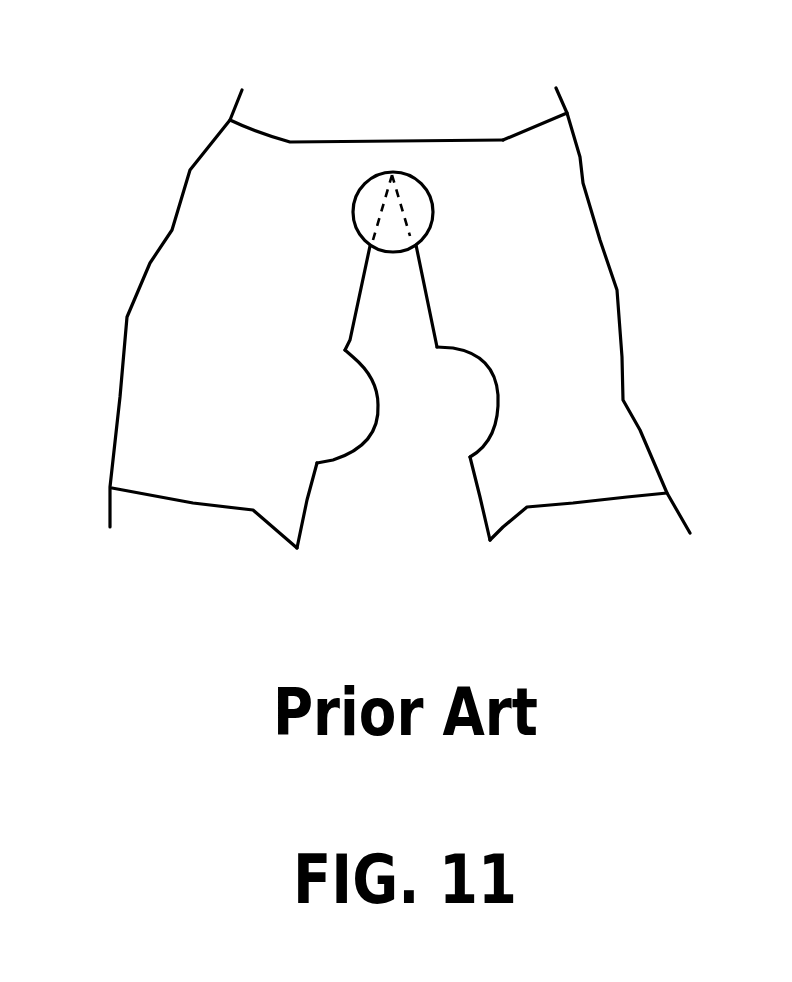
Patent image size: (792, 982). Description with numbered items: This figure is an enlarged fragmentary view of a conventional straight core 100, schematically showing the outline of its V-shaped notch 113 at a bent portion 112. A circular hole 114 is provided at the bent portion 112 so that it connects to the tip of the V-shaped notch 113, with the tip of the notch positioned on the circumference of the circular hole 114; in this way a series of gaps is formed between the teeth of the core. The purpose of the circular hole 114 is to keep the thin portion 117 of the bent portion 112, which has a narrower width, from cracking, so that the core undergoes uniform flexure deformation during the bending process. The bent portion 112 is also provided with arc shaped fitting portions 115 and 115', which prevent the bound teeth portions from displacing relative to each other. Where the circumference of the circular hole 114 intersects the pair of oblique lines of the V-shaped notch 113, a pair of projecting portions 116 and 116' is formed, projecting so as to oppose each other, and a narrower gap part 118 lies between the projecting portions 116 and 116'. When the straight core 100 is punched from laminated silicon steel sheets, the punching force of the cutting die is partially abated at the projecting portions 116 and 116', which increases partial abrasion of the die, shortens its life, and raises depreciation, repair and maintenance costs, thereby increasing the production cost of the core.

The straight core 100 is at (280, 103).
The bent portion 112 is at (510, 172).
The V-shaped notch 113 is at (402, 515).
The circular hole 114 is at (432, 222).
The arc shaped fitting portion 115 is at (270, 406).
The arc shaped fitting portion 115' is at (602, 402).
The projecting portion 116 is at (281, 298).
The projecting portion 116' is at (570, 296).
The thin portion 117 is at (402, 152).
The narrower gap part 118 is at (406, 254).